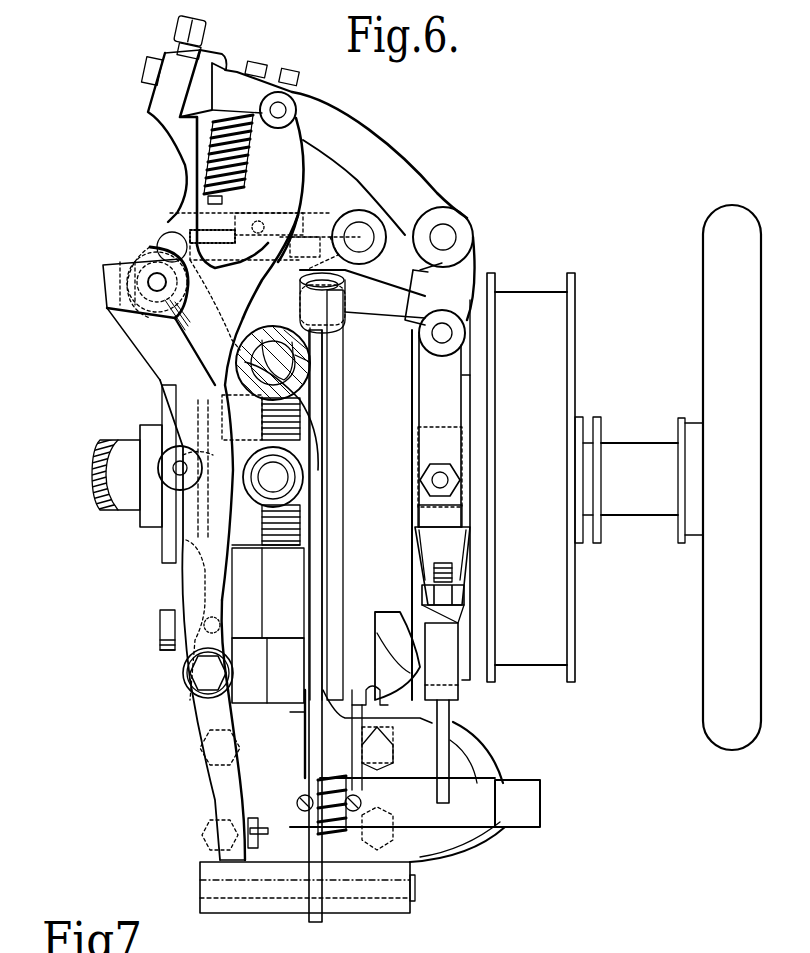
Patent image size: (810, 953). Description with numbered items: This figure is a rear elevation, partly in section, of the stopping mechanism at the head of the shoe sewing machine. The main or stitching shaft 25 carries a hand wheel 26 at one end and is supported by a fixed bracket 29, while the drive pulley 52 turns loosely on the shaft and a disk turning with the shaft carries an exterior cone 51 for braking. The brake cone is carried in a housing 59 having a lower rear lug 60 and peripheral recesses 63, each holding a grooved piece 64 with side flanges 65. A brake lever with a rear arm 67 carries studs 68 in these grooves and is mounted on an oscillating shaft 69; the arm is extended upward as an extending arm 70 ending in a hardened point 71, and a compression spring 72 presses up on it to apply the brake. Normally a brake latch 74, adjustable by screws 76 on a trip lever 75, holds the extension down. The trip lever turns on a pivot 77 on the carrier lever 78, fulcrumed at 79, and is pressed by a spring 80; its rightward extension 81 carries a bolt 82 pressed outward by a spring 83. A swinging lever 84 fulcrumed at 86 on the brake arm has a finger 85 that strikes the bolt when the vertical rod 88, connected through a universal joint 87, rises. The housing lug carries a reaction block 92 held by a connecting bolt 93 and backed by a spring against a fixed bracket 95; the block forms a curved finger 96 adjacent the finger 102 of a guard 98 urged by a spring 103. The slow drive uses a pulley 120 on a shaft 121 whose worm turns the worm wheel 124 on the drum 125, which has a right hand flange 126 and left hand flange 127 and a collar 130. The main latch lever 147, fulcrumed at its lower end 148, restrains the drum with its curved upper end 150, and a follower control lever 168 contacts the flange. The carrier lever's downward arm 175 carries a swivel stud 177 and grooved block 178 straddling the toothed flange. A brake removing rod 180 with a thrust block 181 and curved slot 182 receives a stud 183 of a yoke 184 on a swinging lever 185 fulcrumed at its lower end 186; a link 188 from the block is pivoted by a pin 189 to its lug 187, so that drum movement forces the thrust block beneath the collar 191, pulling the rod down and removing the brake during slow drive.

The main or stitching shaft 25 is at (68, 494).
The hand wheel 26 is at (732, 477).
The fixed bracket 29 is at (395, 912).
The exterior cone 51 is at (345, 532).
The drive pulley 52 is at (531, 477).
The housing 59 is at (480, 410).
The lug 60 is at (455, 565).
The peripheral recesses 63 is at (468, 418).
The grooved piece 64 is at (450, 520).
The side flanges 65 is at (465, 513).
The rear arm 67 is at (436, 515).
The studs 68 is at (440, 470).
The oscillating shaft 69 is at (450, 232).
The extending arm 70 is at (372, 177).
The hardened point 71 is at (235, 80).
The compression spring 72 is at (230, 138).
The brake latch 74 is at (215, 55).
The trip lever 75 is at (160, 118).
The screws 76 is at (173, 32).
The pivot 77 is at (172, 232).
The carrier lever 78 is at (314, 216).
The fulcrum 79 is at (359, 237).
The spring 80 is at (158, 318).
The rightward extension 81 is at (225, 213).
The bolt 82 is at (300, 225).
The spring 83 is at (190, 230).
The swinging lever 84 is at (388, 275).
The finger 85 is at (327, 235).
The fulcrum 86 is at (435, 342).
The universal joint 87 is at (340, 322).
The vertical rod 88 is at (318, 600).
The reaction block 92 is at (450, 660).
The connecting bolt 93 is at (432, 574).
The fixed bracket 95 is at (517, 803).
The curved finger 96 is at (375, 650).
The guard 98 is at (460, 712).
The finger 102 is at (355, 700).
The spring 103 is at (335, 836).
The pulley 120 is at (312, 350).
The shaft 121 is at (266, 332).
The worm wheel 124 is at (302, 556).
The drum 125 is at (268, 636).
The right hand flange 126 is at (170, 560).
The left hand flange 127 is at (240, 545).
The collar 130 is at (145, 515).
The main latch lever 147 is at (225, 778).
The lower end 148 is at (215, 878).
The curved upper end 150 is at (195, 540).
The follower control lever 168 is at (226, 592).
The downward arm 175 is at (333, 470).
The swivel stud 177 is at (280, 480).
The grooved block 178 is at (300, 500).
The brake removing rod 180 is at (263, 266).
The thrust block 181 is at (261, 417).
The curved slot 182 is at (160, 250).
The stud 183 is at (148, 270).
The yoke 184 is at (110, 280).
The swinging lever 185 is at (165, 360).
The lower end 186 is at (205, 675).
The lug 187 is at (170, 478).
The link 188 is at (263, 525).
The pin 189 is at (174, 466).
The collar 191 is at (312, 365).